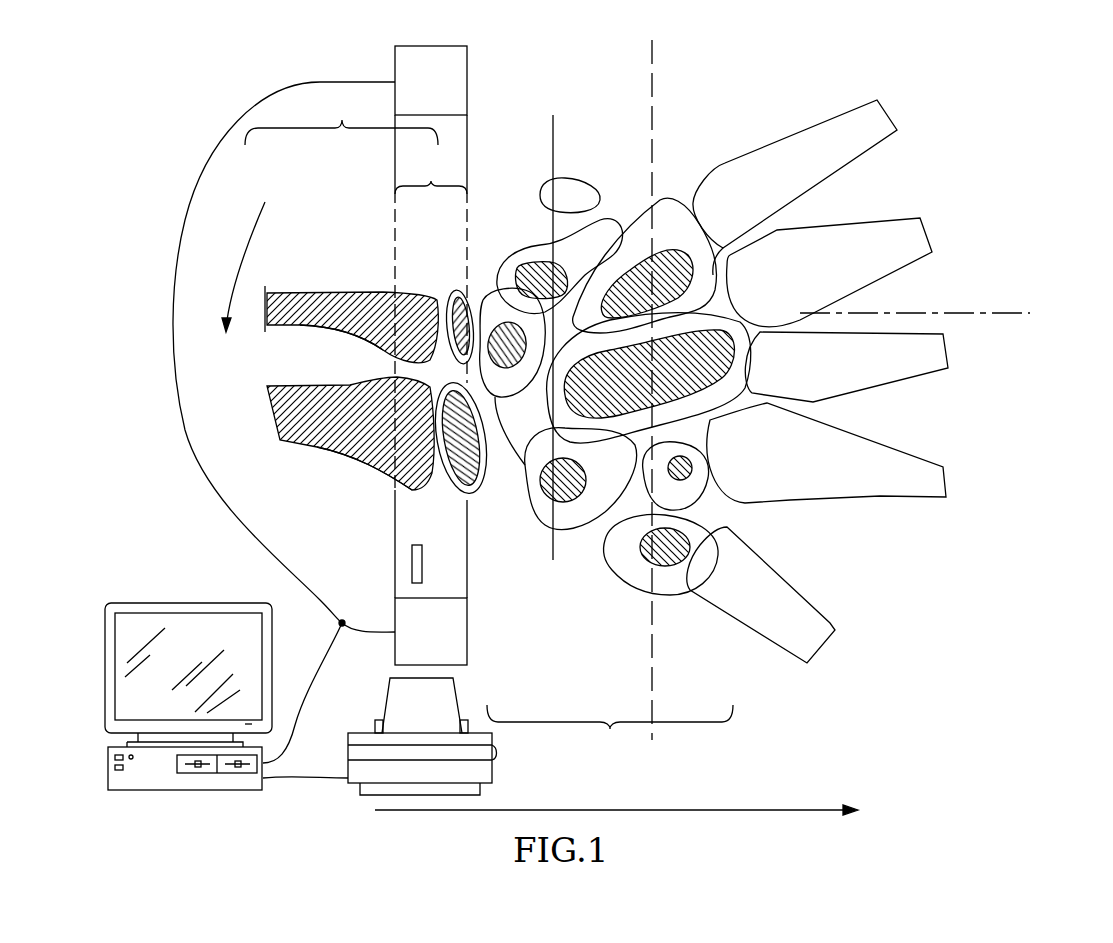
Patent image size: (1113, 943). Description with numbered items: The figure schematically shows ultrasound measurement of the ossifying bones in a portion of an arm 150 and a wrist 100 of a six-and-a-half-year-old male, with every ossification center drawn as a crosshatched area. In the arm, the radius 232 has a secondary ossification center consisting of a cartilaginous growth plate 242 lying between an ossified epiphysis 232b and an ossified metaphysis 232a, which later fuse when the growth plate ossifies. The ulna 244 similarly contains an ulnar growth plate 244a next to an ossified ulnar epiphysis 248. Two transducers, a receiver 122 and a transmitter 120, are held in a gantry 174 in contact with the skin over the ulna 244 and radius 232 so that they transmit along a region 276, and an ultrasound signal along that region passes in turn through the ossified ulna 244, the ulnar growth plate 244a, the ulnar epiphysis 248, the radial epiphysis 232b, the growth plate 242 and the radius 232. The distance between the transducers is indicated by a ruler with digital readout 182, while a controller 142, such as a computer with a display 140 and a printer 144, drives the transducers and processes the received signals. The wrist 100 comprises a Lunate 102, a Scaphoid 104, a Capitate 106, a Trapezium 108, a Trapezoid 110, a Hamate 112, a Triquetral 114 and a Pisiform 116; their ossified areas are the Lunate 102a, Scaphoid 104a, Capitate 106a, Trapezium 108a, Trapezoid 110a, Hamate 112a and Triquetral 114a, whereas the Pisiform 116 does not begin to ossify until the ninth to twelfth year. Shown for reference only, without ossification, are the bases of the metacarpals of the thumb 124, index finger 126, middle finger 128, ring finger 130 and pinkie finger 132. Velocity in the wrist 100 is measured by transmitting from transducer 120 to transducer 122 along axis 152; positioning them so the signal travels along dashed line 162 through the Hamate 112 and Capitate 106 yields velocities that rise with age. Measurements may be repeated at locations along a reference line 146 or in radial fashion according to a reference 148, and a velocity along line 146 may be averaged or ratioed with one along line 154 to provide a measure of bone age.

The wrist 100 is at (610, 732).
The Lunate 102 is at (503, 297).
The ossified area of the Lunate 102a is at (505, 323).
The Scaphoid 104 is at (526, 520).
The ossified area of the Scaphoid 104a is at (568, 515).
The Capitate 106 is at (735, 380).
The Capitate ossification center 106a is at (750, 395).
The Trapezium 108 is at (662, 580).
The ossified area of the Trapezium 108a is at (633, 565).
The Trapezoid 110 is at (700, 465).
The ossified area of the Trapezoid 110a is at (708, 490).
The Hamate 112 is at (668, 253).
The ossification center of the Hamate 112a is at (668, 205).
The Triquetral 114 is at (543, 250).
The ossified area of the Triquetral 114a is at (557, 277).
The Pisiform 116 is at (597, 192).
The transmitter 120 is at (450, 646).
The receiver 122 is at (450, 90).
The base of thumb metacarpal 124 is at (812, 641).
The base of index finger metacarpal 126 is at (945, 482).
The base of middle finger metacarpal 128 is at (940, 360).
The base of ring finger metacarpal 130 is at (918, 237).
The base of pinkie finger metacarpal 132 is at (880, 121).
The display 140 is at (160, 603).
The controller 142 is at (133, 790).
The printer 144 is at (358, 732).
The reference line 146 is at (677, 808).
The reference 148 is at (234, 266).
The arm 150 is at (341, 120).
The axis 152 is at (555, 157).
The line 154 is at (1030, 316).
The dashed line 162 is at (666, 53).
The gantry 174 is at (468, 130).
The ruler with digital readout 182 is at (412, 565).
The radius 232 is at (282, 436).
The metaphysis 232a is at (355, 438).
The epiphysis 232b is at (477, 497).
The growth plate 242 is at (437, 495).
The ulna 244 is at (310, 303).
The ulnar growth plate 244a is at (434, 364).
The ulnar epiphysis 248 is at (450, 297).
The region 276 is at (431, 176).